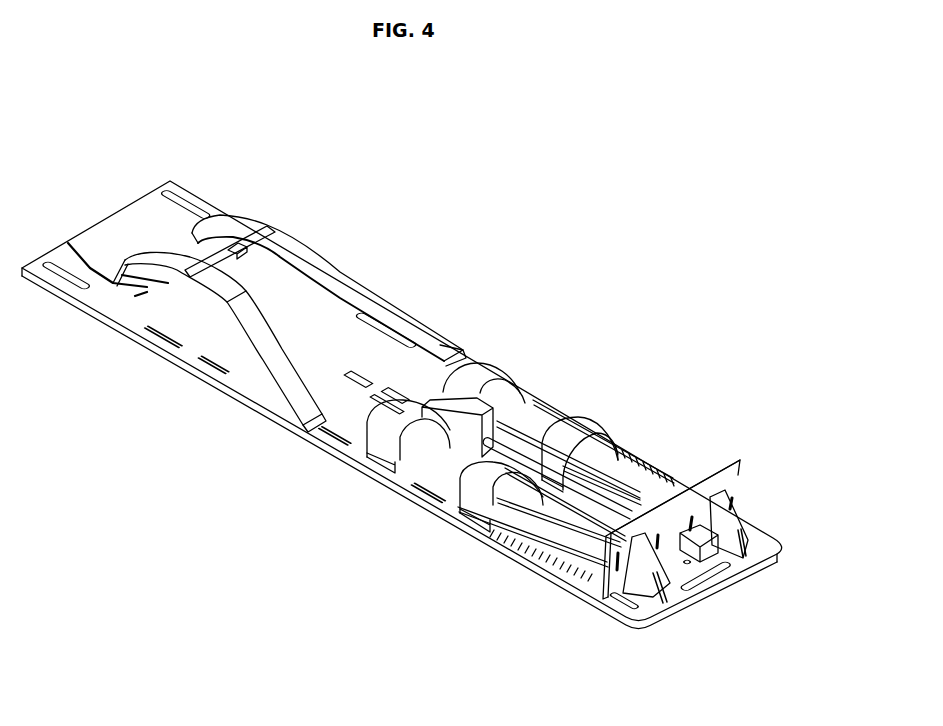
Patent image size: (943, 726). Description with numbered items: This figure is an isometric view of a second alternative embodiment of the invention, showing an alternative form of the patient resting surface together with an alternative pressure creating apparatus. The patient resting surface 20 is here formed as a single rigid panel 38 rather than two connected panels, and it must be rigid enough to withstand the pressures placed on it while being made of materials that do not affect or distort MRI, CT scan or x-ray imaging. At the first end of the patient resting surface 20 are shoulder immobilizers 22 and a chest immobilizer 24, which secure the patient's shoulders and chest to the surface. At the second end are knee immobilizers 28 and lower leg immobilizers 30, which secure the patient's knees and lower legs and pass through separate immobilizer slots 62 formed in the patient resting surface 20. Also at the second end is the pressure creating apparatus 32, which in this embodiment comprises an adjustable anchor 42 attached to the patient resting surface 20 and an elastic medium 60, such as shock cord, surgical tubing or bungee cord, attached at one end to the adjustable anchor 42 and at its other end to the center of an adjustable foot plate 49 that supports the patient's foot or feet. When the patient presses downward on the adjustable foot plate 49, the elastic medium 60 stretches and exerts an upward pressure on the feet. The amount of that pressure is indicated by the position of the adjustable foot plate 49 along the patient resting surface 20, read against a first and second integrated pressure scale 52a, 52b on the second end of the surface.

The patient resting surface 20 is at (334, 348).
The shoulder immobilizers 22 is at (253, 326).
The chest immobilizer 24 is at (215, 247).
The knee immobilizers 28 is at (402, 412).
The lower leg immobilizers 30 is at (540, 450).
The pressure creating apparatus 32 is at (486, 409).
The single rigid panel 38 is at (334, 369).
The adjustable anchor 42 is at (468, 430).
The adjustable foot plate 49 is at (735, 482).
The first integrated pressure scale 52a is at (550, 562).
The second integrated pressure scale 52b is at (636, 463).
The elastic medium 60 is at (592, 485).
The immobilizer slots 62 is at (732, 500).